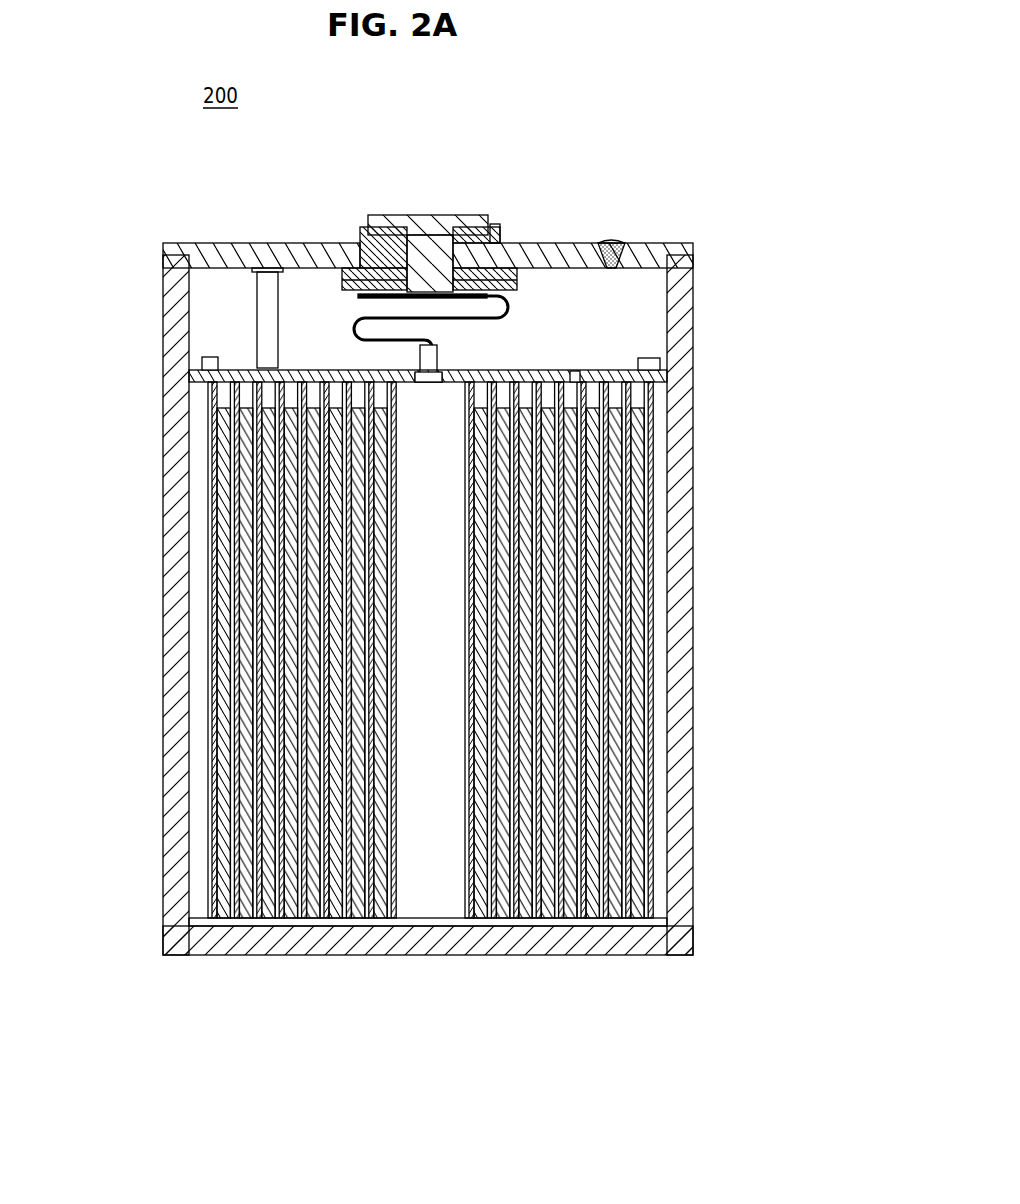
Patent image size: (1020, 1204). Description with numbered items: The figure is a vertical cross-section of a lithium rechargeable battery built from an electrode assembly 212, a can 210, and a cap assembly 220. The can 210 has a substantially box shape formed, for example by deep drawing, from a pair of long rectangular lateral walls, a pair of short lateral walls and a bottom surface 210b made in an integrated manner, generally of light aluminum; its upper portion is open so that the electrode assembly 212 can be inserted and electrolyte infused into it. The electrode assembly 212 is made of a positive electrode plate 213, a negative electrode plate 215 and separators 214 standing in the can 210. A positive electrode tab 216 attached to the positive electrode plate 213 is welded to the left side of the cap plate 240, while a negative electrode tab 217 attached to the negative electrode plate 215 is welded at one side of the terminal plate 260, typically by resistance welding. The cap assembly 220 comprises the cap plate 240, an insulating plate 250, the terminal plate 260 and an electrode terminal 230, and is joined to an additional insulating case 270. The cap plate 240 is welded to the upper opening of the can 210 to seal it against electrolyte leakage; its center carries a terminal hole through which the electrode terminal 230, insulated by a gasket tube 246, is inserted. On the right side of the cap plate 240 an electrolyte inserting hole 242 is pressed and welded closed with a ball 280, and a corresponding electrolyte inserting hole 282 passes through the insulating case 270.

The can 210 is at (477, 645).
The bottom surface 210b is at (287, 956).
The electrode assembly 212 is at (446, 726).
The positive electrode plate 213 is at (635, 915).
The separators 214 is at (623, 915).
The negative electrode plate 215 is at (612, 915).
The positive electrode tab 216 is at (263, 313).
The negative electrode tab 217 is at (355, 330).
The cap assembly 220 is at (433, 242).
The electrode terminal 230 is at (425, 215).
The cap plate 240 is at (218, 250).
The electrolyte inserting hole 242 is at (611, 268).
The gasket tube 246 is at (497, 225).
The insulating plate 250 is at (340, 268).
The terminal plate 260 is at (503, 295).
The insulating case 270 is at (660, 368).
The ball 280 is at (613, 243).
The electrolyte inserting hole 282 is at (570, 371).